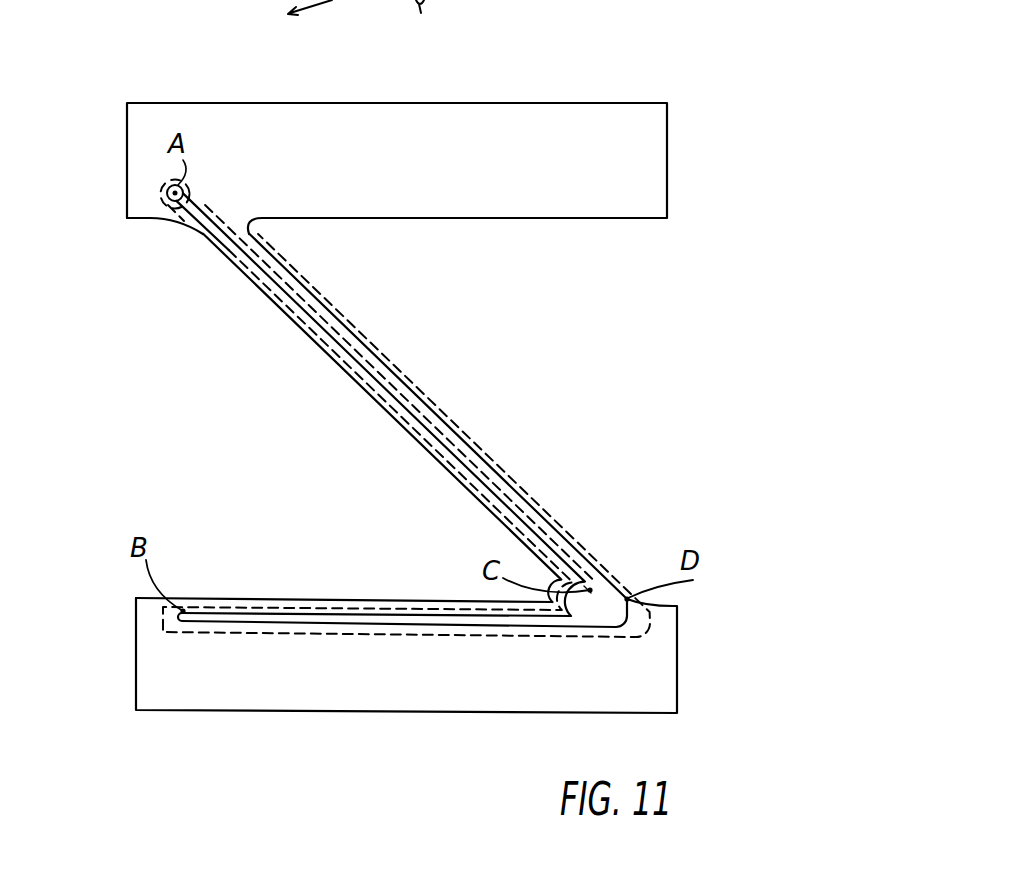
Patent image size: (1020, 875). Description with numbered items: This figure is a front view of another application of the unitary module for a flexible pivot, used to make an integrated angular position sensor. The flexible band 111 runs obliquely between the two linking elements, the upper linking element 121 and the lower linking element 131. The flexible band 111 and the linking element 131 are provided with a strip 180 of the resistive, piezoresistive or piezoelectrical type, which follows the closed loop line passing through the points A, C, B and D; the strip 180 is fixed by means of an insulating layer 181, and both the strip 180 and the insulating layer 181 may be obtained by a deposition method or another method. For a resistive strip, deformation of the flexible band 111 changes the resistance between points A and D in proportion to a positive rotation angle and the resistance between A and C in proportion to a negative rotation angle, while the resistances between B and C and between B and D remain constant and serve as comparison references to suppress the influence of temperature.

The flexible band 111 is at (406, 409).
The linking element 121 is at (643, 167).
The linking element 131 is at (153, 657).
The strip 180 is at (482, 468).
The insulating layer 181 is at (302, 288).